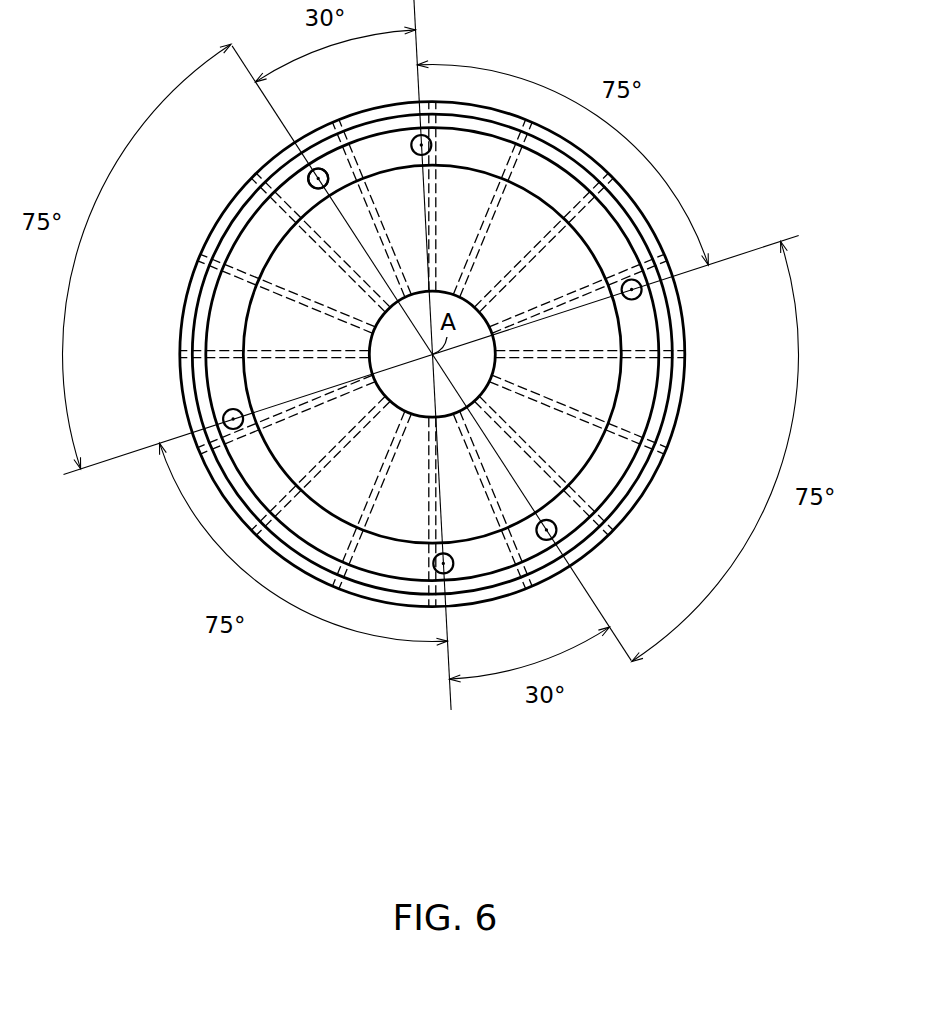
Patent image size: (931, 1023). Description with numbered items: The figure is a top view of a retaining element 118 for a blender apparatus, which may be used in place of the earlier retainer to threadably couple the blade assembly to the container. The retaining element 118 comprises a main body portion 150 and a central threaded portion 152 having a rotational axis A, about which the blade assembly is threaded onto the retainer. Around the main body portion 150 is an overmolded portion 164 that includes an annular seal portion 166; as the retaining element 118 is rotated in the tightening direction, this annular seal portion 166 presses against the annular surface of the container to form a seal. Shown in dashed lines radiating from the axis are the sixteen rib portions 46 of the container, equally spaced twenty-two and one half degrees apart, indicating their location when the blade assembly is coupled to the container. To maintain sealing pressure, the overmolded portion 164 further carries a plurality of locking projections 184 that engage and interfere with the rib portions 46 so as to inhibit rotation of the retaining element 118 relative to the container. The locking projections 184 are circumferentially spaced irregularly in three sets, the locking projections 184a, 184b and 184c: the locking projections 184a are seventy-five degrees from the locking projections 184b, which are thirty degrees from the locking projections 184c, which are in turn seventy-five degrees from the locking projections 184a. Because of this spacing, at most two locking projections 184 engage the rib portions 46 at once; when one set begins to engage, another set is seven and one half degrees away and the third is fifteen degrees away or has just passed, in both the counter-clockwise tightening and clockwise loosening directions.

The rib portions 46 is at (665, 358).
The retaining element 118 is at (213, 228).
The main body portion 150 is at (185, 296).
The threaded portion 152 is at (397, 407).
The overmolded portion 164 is at (640, 477).
The annular seal portion 166 is at (663, 428).
The locking projections 184 is at (308, 178).
The locking projections (first set) 184a is at (222, 413).
The locking projections (second set) 184b is at (416, 137).
The locking projections (third set) 184c is at (322, 168).